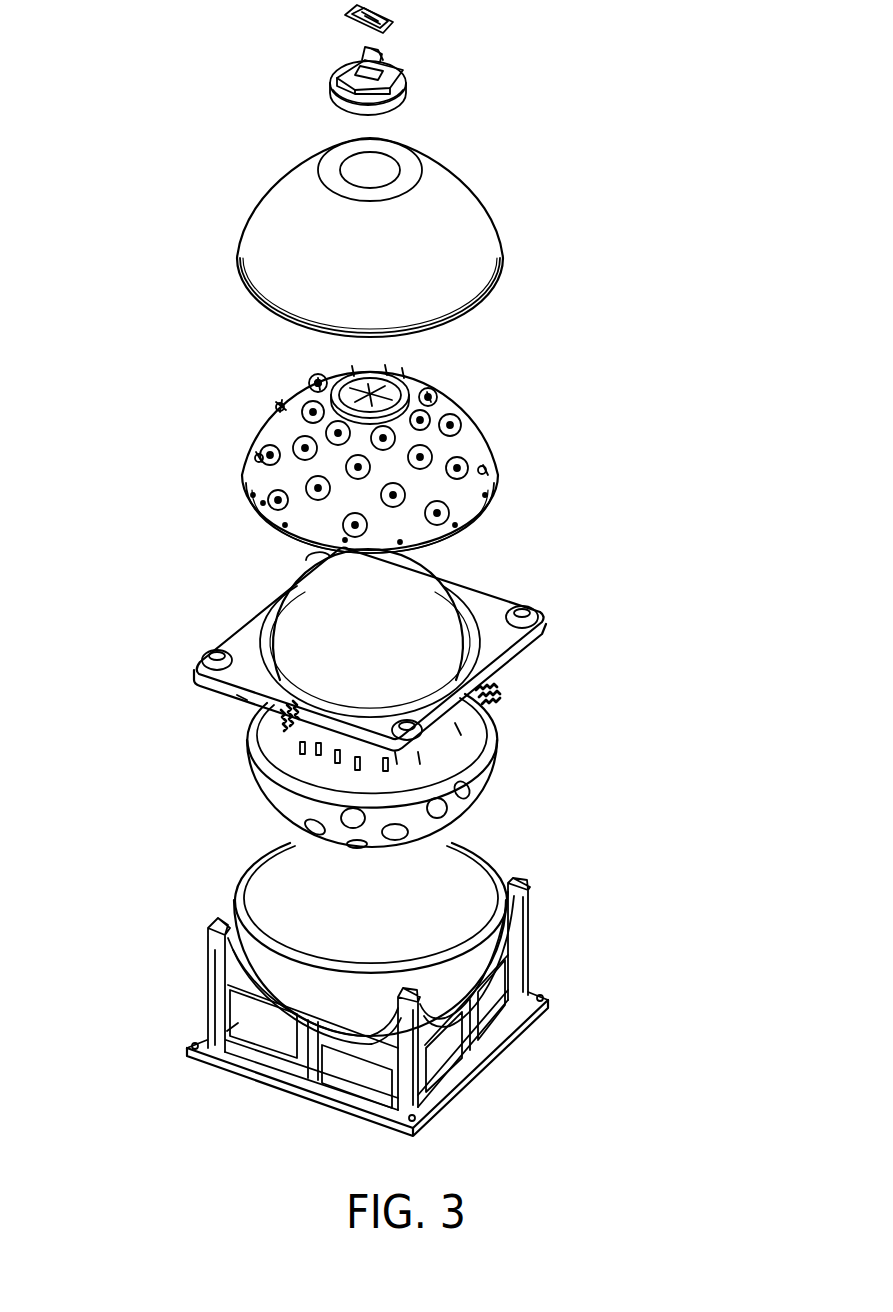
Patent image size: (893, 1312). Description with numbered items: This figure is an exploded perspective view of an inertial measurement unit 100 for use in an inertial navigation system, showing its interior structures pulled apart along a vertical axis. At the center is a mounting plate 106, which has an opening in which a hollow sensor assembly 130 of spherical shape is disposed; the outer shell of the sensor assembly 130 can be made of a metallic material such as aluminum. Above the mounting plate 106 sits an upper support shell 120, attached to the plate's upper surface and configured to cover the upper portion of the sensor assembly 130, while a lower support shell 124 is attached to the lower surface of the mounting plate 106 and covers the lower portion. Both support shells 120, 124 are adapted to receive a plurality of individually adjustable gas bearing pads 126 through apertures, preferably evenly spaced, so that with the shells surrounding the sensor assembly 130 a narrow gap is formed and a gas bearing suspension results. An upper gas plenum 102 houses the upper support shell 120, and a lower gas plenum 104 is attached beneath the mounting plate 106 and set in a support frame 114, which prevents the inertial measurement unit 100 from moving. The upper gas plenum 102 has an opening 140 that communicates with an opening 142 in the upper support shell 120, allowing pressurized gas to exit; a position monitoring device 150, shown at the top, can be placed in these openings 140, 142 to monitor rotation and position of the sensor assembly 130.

The inertial measurement unit 100 is at (140, 152).
The upper gas plenum 102 is at (487, 210).
The lower gas plenum 104 is at (487, 853).
The mounting plate 106 is at (545, 628).
The support frame 114 is at (500, 1036).
The upper support shell 120 is at (473, 513).
The lower support shell 124 is at (497, 740).
The gas bearing pads 126 is at (280, 405).
The sensor assembly 130 is at (327, 610).
The opening 140 is at (358, 163).
The opening 142 is at (380, 392).
The position monitoring device 150 is at (437, 5).